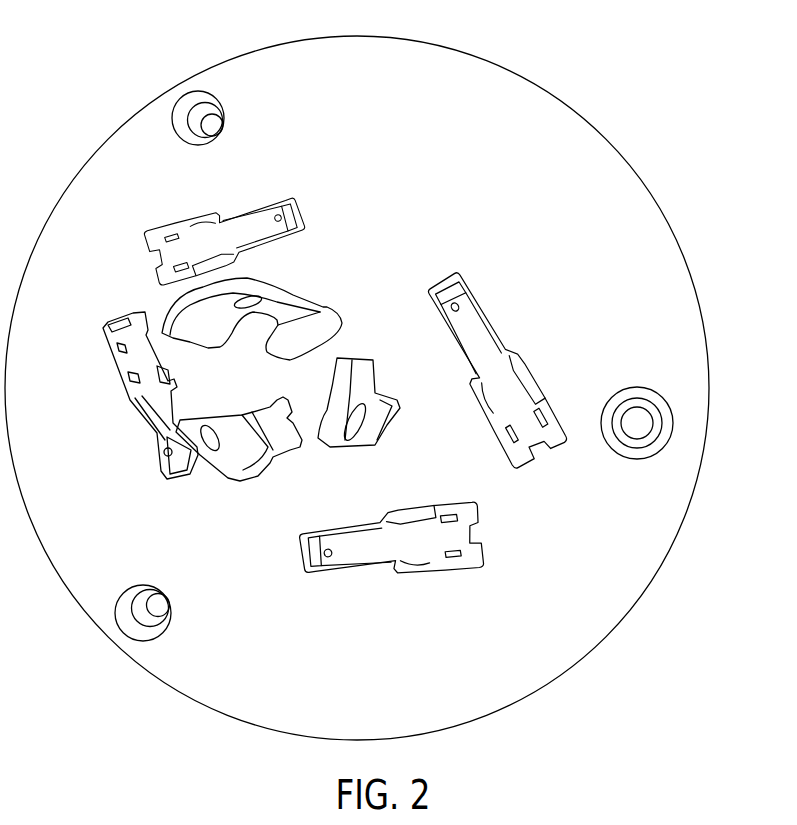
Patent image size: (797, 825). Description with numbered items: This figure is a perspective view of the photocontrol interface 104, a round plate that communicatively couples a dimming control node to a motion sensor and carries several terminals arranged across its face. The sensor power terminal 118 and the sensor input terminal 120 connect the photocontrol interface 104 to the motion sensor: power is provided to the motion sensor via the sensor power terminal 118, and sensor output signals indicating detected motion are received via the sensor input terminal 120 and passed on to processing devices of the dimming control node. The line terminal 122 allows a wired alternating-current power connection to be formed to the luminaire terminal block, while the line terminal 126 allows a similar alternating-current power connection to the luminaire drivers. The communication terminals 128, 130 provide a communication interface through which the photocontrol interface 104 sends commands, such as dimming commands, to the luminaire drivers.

The photocontrol interface 104 is at (68, 68).
The sensor power terminal 118 is at (152, 240).
The sensor input terminal 120 is at (320, 305).
The line terminal 122 is at (238, 478).
The line terminal 126 is at (393, 422).
The communication terminal 128 is at (488, 568).
The communication terminal 130 is at (550, 452).